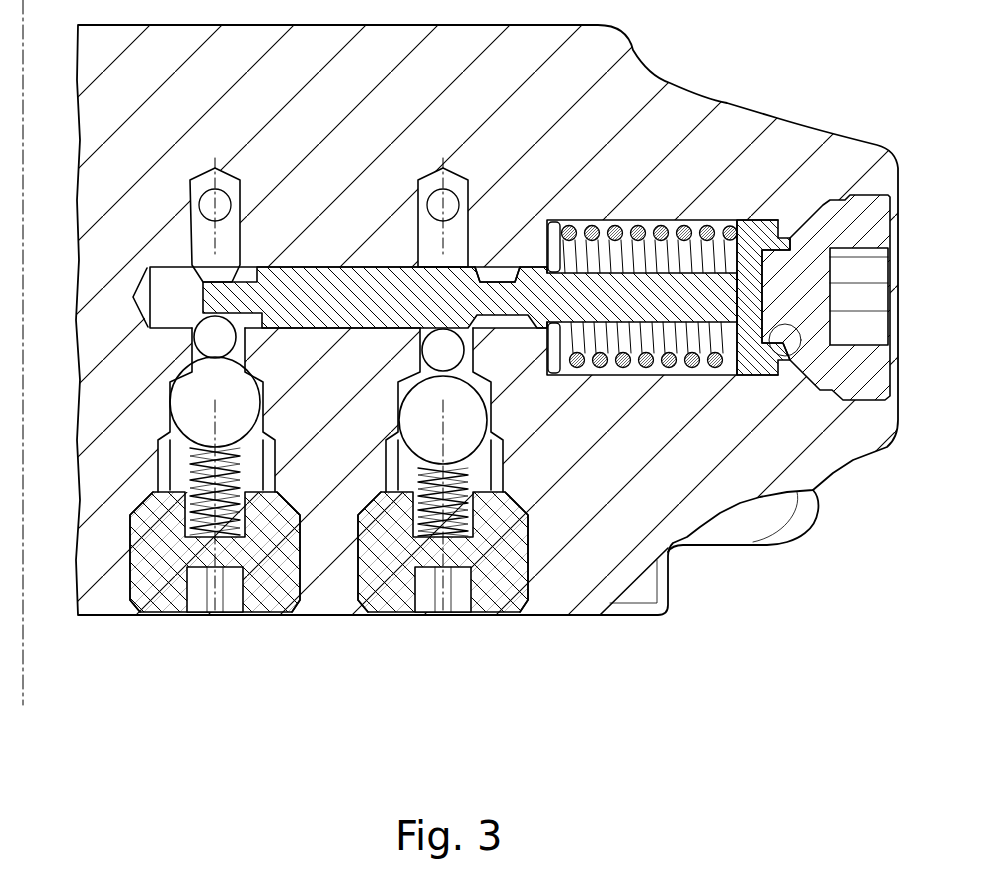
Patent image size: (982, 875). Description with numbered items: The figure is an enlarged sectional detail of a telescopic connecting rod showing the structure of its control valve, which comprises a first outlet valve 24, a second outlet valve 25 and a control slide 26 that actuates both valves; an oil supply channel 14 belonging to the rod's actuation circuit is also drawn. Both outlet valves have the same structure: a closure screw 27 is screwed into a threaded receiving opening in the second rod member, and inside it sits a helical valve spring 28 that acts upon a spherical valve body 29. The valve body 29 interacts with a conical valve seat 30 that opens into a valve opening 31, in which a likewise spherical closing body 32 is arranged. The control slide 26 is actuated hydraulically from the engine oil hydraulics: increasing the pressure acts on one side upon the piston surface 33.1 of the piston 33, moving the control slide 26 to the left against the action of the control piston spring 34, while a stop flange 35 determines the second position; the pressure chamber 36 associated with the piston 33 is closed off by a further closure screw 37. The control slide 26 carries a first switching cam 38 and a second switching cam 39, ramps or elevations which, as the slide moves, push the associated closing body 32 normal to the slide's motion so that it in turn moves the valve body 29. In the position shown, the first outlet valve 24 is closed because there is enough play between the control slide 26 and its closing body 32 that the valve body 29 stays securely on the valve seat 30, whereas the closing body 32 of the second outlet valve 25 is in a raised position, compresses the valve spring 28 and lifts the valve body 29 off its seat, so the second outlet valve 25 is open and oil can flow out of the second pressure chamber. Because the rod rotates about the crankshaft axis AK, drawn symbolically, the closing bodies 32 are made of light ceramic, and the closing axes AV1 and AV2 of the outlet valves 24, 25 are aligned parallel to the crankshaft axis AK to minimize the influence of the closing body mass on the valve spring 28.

The oil supply channel 14 is at (205, 207).
The first outlet valve 24 is at (140, 485).
The second outlet valve 25 is at (512, 470).
The control slide 26 is at (647, 200).
The closure screw 27 is at (147, 616).
The valve spring 28 is at (190, 462).
The valve body 29 is at (185, 403).
The valve seat 30 is at (172, 378).
The valve opening 31 is at (398, 298).
The closing body 32 is at (196, 343).
The piston 33 is at (757, 232).
The piston surface 33.1 is at (795, 356).
The control piston spring 34 is at (662, 234).
The stop flange 35 is at (603, 258).
The pressure chamber 36 is at (792, 230).
The closure screw 37 is at (853, 222).
The first switching cam 38 is at (257, 278).
The second switching cam 39 is at (472, 278).
The crankshaft axis AK is at (27, 670).
The closing axis of first outlet valve AV1 is at (215, 622).
The closing axis of second outlet valve AV2 is at (443, 622).